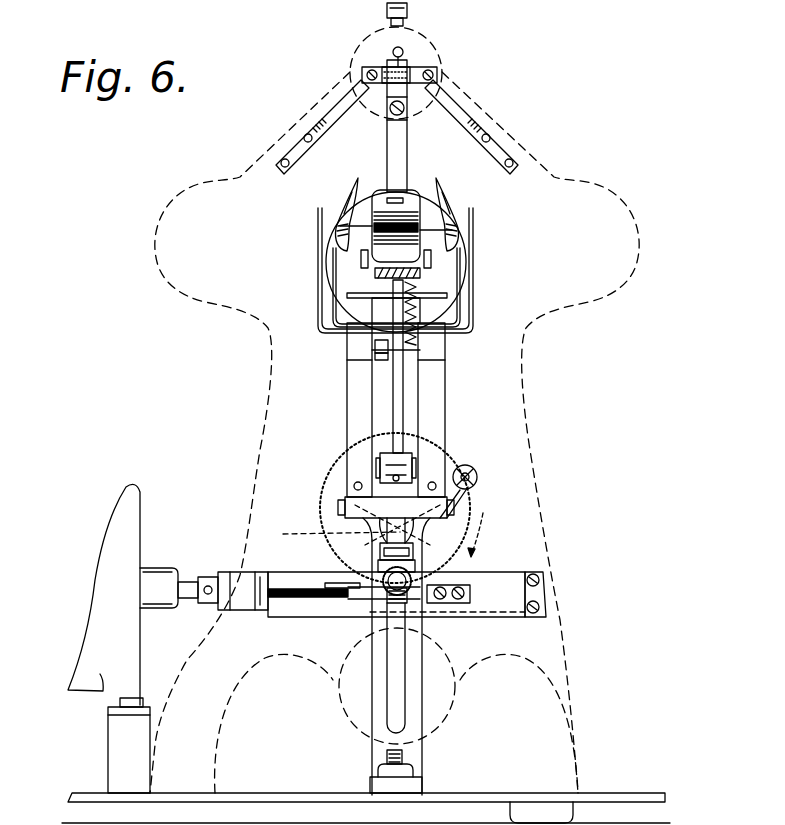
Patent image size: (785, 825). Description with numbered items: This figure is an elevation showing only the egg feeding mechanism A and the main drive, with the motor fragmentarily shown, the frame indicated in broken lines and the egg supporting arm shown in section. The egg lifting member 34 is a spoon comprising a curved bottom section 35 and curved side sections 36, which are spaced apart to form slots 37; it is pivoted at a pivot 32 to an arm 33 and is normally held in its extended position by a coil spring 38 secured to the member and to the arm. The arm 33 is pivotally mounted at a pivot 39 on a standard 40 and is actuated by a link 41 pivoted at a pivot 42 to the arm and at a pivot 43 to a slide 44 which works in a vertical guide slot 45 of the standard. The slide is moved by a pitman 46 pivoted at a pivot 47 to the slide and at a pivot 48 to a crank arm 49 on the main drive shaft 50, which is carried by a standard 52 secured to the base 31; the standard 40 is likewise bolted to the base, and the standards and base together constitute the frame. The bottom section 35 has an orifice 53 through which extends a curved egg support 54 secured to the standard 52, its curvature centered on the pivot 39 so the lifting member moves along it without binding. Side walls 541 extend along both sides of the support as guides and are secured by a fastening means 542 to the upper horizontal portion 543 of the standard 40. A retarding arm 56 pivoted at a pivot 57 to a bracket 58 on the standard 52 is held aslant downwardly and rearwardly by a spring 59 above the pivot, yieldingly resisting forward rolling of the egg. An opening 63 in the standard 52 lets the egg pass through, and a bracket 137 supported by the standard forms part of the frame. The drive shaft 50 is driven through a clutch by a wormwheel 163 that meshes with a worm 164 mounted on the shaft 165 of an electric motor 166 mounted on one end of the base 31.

The base 31 is at (640, 795).
The pivot 32 is at (450, 295).
The arm 33 is at (403, 382).
The egg lifting member 34 is at (352, 186).
The egg feeding mechanism A is at (445, 186).
The curved bottom section 35 is at (410, 190).
The curved side sections 36 is at (353, 192).
The slots 37 is at (360, 226).
The coil spring 38 is at (387, 330).
The pivot 39 is at (338, 508).
The standard 40 is at (423, 696).
The link 41 is at (393, 527).
The pivot 42 is at (413, 466).
The pivot 43 is at (322, 601).
The slide 44 is at (416, 556).
The vertical guide slot 45 is at (384, 660).
The pitman 46 is at (425, 531).
The pivot 47 is at (455, 561).
The pivot 48 is at (477, 477).
The crank arm 49 is at (398, 485).
The main drive shaft 50 is at (348, 526).
The standard 52 is at (637, 256).
The orifice 53 is at (377, 273).
The curved egg support 54 is at (440, 269).
The retarding arm 56 is at (388, 143).
The pivot 57 is at (420, 80).
The bracket 58 is at (452, 103).
The spring 59 is at (393, 49).
The opening 63 is at (318, 318).
The bracket 137 is at (507, 596).
The wormwheel 163 is at (338, 471).
The worm 164 is at (420, 610).
The shaft 165 is at (270, 612).
The electric motor 166 is at (128, 528).
The side walls 541 is at (320, 235).
The fastening means 542 is at (385, 345).
The upper horizontal portion 543 is at (430, 336).